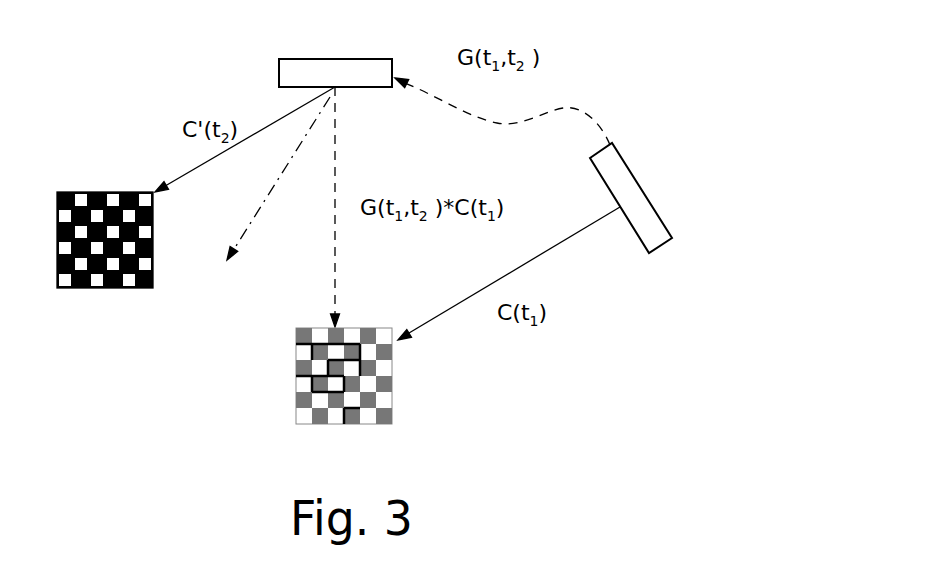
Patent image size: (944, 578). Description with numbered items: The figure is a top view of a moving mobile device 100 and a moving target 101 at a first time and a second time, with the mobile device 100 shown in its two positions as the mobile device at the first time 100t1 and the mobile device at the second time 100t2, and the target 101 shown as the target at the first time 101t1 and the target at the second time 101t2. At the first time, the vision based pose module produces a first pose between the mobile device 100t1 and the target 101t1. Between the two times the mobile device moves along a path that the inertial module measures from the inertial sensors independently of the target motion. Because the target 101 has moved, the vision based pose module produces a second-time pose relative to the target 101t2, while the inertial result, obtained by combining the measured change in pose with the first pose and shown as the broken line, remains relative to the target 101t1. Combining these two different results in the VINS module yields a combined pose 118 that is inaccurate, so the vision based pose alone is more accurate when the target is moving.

The mobile device 100 is at (468, 141).
The mobile device at first time t1 100t1 is at (657, 209).
The mobile device at second time t2 100t2 is at (279, 70).
The target 101 is at (199, 275).
The target at first time t1 101t1 is at (296, 392).
The target at second time t2 101t2 is at (97, 192).
The combined pose 118 is at (245, 230).